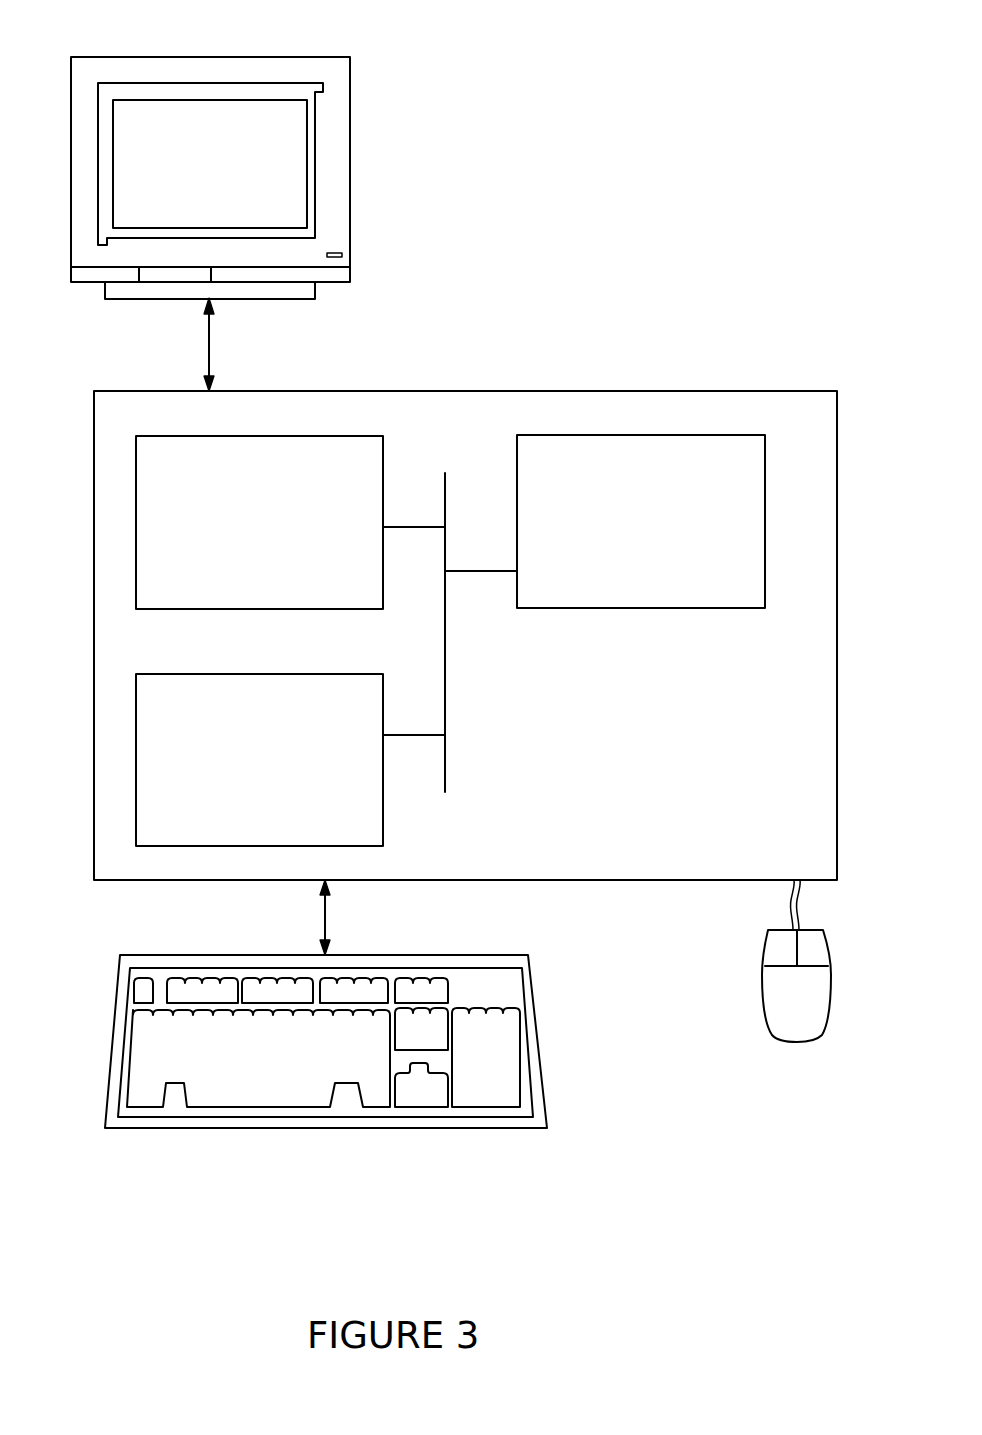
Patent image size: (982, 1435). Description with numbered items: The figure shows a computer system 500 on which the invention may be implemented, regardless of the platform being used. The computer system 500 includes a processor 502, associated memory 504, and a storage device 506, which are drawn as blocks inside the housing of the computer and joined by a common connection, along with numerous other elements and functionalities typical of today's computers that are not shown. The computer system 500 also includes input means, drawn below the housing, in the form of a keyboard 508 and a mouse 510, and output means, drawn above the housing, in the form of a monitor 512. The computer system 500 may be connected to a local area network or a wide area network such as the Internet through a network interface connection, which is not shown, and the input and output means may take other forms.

The computer system 500 is at (596, 234).
The processor 502 is at (604, 536).
The memory 504 is at (238, 536).
The storage device 506 is at (234, 771).
The keyboard 508 is at (233, 1067).
The mouse 510 is at (774, 1007).
The monitor 512 is at (184, 182).